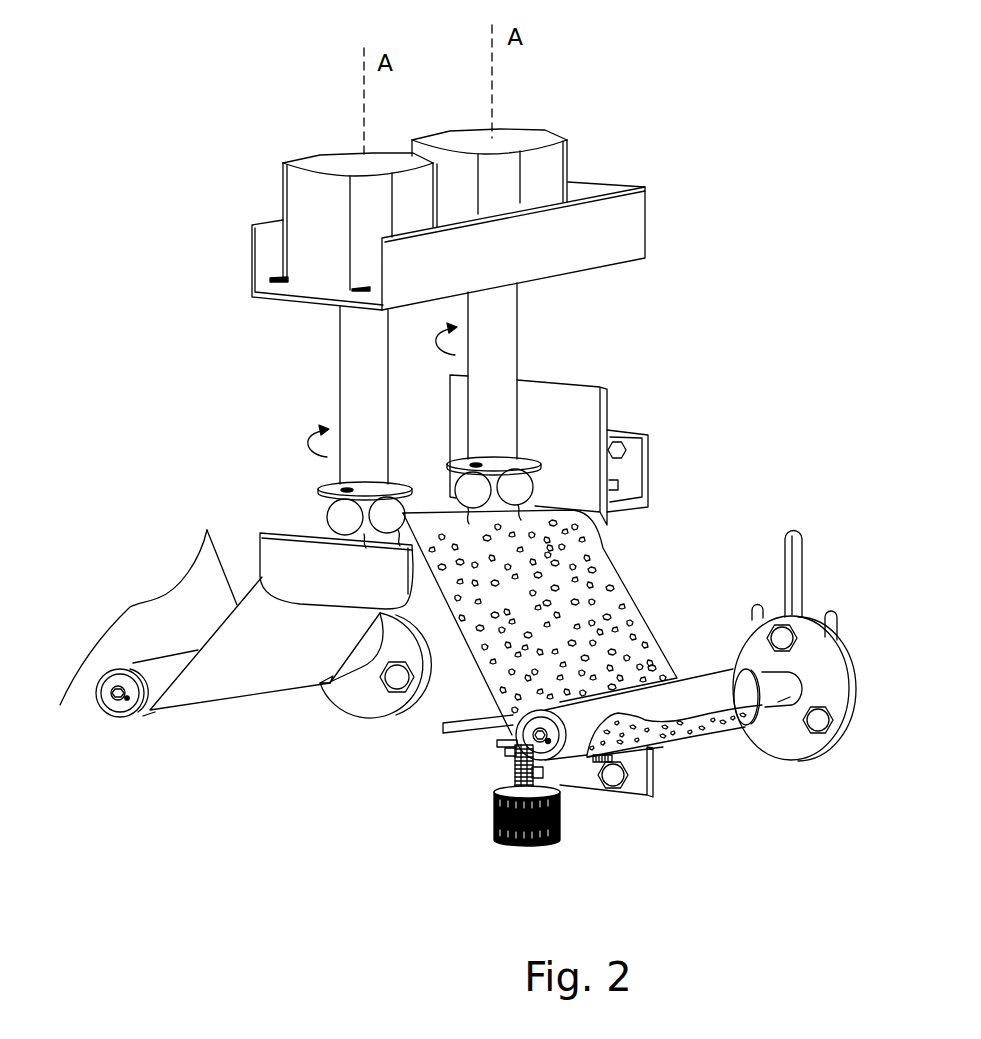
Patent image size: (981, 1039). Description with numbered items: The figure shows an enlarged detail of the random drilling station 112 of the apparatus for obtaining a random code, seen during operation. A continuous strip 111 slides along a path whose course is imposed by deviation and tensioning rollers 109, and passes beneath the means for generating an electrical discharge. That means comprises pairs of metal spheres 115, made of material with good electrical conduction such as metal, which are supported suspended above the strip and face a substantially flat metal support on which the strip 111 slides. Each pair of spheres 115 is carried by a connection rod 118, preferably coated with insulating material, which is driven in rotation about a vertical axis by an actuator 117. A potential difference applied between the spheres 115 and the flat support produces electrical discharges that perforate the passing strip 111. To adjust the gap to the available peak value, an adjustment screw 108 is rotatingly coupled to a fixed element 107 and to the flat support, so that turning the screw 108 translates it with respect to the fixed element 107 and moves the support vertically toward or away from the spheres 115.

The fixed element 107 is at (443, 727).
The adjustment screw 108 is at (513, 778).
The deviation and tensioning rollers 109 is at (160, 670).
The continuous strip 111 is at (245, 675).
The random drilling station 112 is at (722, 325).
The metal sphere 115 is at (330, 515).
The actuator 117 is at (323, 163).
The connection rod 118 is at (345, 355).